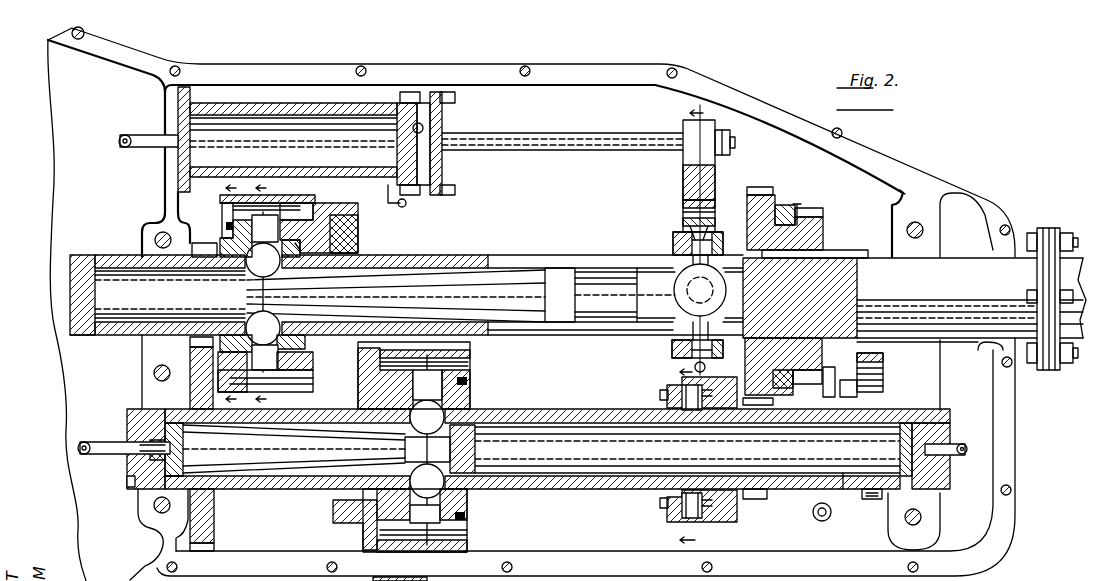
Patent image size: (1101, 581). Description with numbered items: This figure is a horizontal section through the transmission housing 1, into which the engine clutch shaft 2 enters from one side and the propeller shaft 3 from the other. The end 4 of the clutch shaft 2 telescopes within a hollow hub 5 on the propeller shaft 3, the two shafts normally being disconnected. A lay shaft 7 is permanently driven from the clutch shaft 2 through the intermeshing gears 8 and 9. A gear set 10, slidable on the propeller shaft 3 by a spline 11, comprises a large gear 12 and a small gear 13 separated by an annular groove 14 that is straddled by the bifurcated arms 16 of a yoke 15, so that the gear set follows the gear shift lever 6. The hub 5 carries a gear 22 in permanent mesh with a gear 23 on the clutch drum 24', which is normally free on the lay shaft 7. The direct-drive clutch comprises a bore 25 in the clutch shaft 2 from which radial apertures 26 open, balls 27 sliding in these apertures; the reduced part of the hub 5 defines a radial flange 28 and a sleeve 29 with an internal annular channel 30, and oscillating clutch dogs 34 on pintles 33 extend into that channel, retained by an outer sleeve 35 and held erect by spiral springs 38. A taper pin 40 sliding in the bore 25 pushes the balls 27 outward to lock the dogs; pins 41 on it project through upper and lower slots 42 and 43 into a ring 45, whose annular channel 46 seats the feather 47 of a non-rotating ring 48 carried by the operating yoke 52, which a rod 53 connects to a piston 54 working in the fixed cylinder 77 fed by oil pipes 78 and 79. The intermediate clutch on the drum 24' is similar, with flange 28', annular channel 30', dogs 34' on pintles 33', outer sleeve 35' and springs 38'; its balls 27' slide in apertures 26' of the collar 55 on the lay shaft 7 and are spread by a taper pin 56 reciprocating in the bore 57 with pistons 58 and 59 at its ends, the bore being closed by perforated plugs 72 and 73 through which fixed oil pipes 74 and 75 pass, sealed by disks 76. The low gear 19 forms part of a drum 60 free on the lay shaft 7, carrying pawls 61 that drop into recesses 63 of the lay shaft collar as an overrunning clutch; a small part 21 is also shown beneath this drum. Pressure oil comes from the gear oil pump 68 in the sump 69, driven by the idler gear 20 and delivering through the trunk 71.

The housing 1 is at (633, 71).
The clutch shaft 2 is at (95, 337).
The propeller shaft 3 is at (952, 270).
The end of the clutch shaft 4 is at (364, 244).
The hollow hub 5 is at (334, 205).
The gear shift lever 6 is at (696, 457).
The lay shaft 7 is at (776, 519).
The gear 8 is at (190, 341).
The gear 9 is at (195, 391).
The gear set 10 is at (808, 233).
The spline 11 is at (840, 256).
The large gear 12 is at (754, 187).
The small gear 13 is at (812, 208).
The annular groove 14 is at (799, 205).
The yoke 15 is at (782, 205).
The bifurcated arms 16 is at (776, 219).
The low gear 19 is at (758, 503).
The idler gear 20 is at (872, 367).
The nut 21 is at (870, 502).
The gear 22 is at (372, 318).
The gear 23 is at (340, 523).
The clutch drum 24' is at (447, 375).
The bore 25 is at (110, 305).
The radial apertures 26 is at (251, 286).
The radial apertures 26' is at (481, 504).
The balls 27 is at (249, 292).
The balls 27' is at (489, 449).
The radial flange 28 is at (319, 216).
The flange 28' is at (436, 375).
The sleeve 29 is at (291, 194).
The annular channel 30 is at (359, 233).
The annular channel 30' is at (478, 389).
The pintles 33 is at (254, 198).
The pintles 33' is at (451, 531).
The clutch dogs 34 is at (270, 284).
The dogs 34' is at (388, 452).
The outer sleeve 35 is at (250, 312).
The outer sleeve 35' is at (452, 548).
The spiral springs 38 is at (211, 220).
The springs 38' is at (489, 516).
The taper pin 40 is at (378, 286).
The pins 41 is at (683, 259).
The upper slot 42 is at (557, 256).
The lower slot 43 is at (586, 337).
The ring 45 is at (718, 248).
The annular channel 46 is at (693, 240).
The annular feather 47 is at (713, 232).
The non-rotating ring 48 is at (690, 230).
The operating yoke 52 is at (683, 168).
The rod 53 is at (548, 136).
The piston 54 is at (398, 124).
The collar 55 is at (478, 410).
The taper pin 56 is at (322, 461).
The bore 57 is at (843, 472).
The piston 58 is at (165, 476).
The piston 59 is at (415, 448).
The drum 60 is at (672, 523).
The pawls 61 is at (668, 381).
The recesses 63 is at (688, 411).
The gear oil pump 68 is at (830, 401).
The sump 69 is at (843, 176).
The trunk 71 is at (822, 522).
The plug 72 is at (148, 462).
The plug 73 is at (948, 431).
The oil pipe 74 is at (106, 455).
The oil pipe 75 is at (955, 457).
The disks 76 is at (905, 461).
The fixed cylinder 77 is at (232, 117).
The oil pipe 78 is at (142, 152).
The oil pipe 79 is at (404, 204).